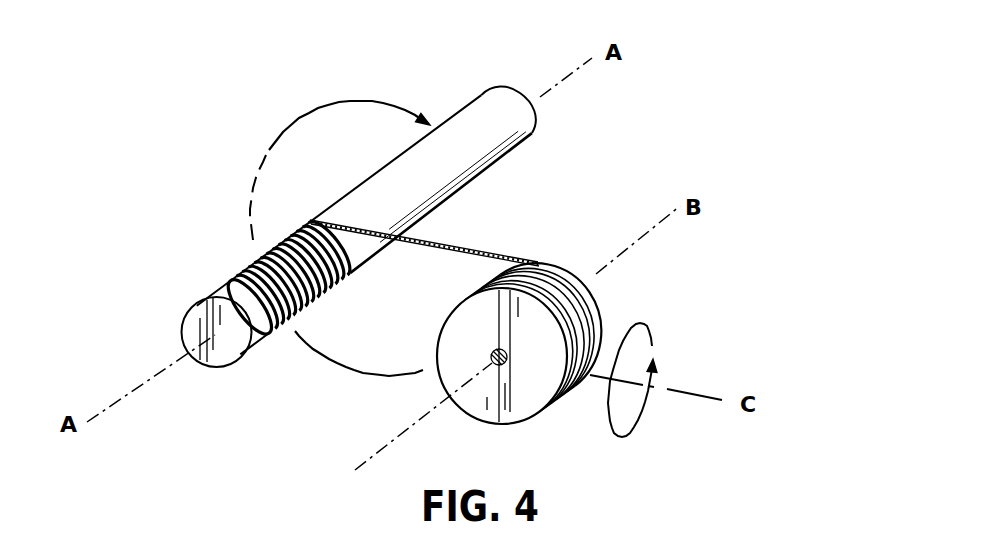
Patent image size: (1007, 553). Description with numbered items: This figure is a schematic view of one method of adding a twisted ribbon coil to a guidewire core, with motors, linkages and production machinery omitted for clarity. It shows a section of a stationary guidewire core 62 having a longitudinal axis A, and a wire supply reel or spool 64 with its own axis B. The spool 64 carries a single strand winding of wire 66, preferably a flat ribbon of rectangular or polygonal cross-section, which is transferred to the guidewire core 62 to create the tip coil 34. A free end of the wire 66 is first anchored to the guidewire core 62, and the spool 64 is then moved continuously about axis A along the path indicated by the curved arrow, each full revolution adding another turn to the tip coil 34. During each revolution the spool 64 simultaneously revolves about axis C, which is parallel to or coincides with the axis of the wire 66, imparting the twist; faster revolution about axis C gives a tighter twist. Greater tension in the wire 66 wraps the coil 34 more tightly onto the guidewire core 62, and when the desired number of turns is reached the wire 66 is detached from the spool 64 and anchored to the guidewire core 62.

The tip coil 34 is at (287, 236).
The guidewire core 62 is at (500, 151).
The spool 64 is at (600, 313).
The wire 66 is at (483, 250).